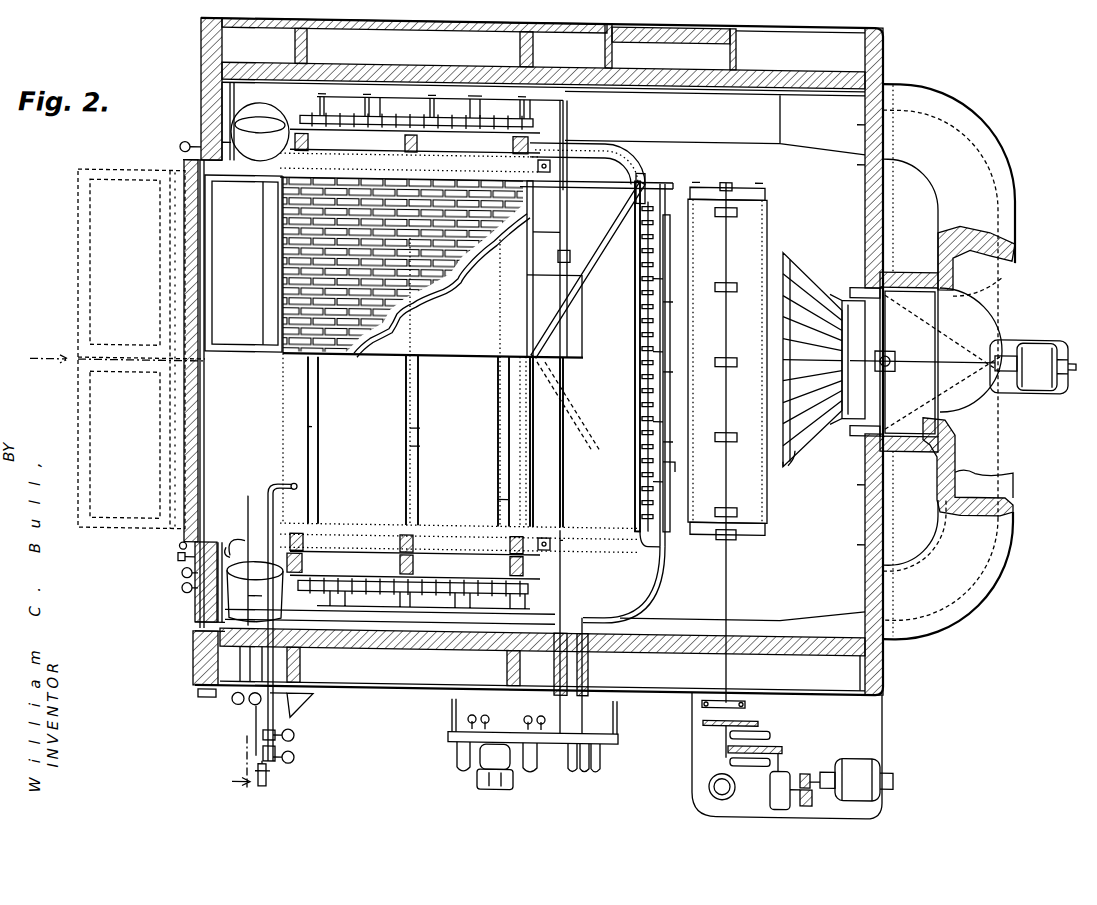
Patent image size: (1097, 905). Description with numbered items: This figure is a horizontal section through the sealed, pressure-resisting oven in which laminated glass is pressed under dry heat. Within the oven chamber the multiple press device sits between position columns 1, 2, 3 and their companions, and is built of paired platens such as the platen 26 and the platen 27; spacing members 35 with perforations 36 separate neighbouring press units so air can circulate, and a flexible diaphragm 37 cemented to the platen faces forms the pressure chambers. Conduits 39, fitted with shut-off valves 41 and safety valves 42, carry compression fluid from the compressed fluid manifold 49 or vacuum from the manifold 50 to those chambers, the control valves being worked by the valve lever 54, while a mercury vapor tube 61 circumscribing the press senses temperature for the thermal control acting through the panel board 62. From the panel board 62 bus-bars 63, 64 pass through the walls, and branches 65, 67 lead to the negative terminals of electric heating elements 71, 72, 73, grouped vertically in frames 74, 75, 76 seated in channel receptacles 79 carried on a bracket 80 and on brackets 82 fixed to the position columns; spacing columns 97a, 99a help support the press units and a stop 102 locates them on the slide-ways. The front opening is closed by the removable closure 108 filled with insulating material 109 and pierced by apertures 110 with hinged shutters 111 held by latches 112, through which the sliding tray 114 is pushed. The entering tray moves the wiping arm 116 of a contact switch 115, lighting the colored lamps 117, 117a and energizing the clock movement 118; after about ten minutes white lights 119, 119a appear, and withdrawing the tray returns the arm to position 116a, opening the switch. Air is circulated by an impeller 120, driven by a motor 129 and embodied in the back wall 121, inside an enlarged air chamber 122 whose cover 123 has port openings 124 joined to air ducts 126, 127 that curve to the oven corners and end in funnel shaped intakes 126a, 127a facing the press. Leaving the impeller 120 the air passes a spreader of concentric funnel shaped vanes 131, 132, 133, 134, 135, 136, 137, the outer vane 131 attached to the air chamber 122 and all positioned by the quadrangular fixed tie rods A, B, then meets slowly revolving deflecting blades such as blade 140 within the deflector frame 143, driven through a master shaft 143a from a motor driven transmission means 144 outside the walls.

The position column 1 is at (280, 128).
The position column 2 is at (417, 146).
The position column 3 is at (513, 146).
The platen 26 is at (275, 295).
The platen 27 is at (513, 228).
The spacing member 35 is at (412, 448).
The perforation 36 is at (313, 430).
The flexible diaphragm 37 is at (433, 268).
The conduit 39 is at (252, 610).
The shut-off valve 41 is at (300, 714).
The safety valve 42 is at (262, 752).
The compressed fluid manifold 49 is at (295, 740).
The vacuum manifold 50 is at (295, 762).
The valve lever 54 is at (268, 784).
The mercury vapor tube 61 is at (340, 145).
The panel board 62 is at (620, 738).
The bus-bar 63 is at (560, 705).
The bus-bar 64 is at (585, 711).
The branch 65 is at (586, 604).
The branch 67 is at (655, 596).
The electric heating element 71 is at (390, 617).
The electric heating element 72 is at (634, 383).
The electric heating element 73 is at (470, 117).
The frame 74 is at (515, 598).
The frame 75 is at (670, 484).
The frame 76 is at (515, 128).
The channel receptacle 79 is at (550, 133).
The bracket 80 is at (636, 166).
The bracket 82 is at (308, 145).
The support block 97a is at (300, 537).
The support block 99a is at (523, 537).
The stop 102 is at (552, 168).
The removable closure 108 is at (204, 112).
The insulating material 109 is at (204, 132).
The aperture 110 is at (190, 441).
The hinged shutter 111 is at (183, 417).
The latch 112 is at (165, 566).
The sliding tray 114 is at (285, 253).
The contact switch 115 is at (254, 580).
The wiping arm 116 is at (266, 535).
The wiping contact position 116a is at (179, 551).
The lamp 117 is at (182, 595).
The colored light 117a is at (256, 733).
The clock movement 118 is at (198, 699).
The white light 119 is at (182, 579).
The white light 119a is at (235, 709).
The impeller 120 is at (858, 283).
The back wall 121 is at (866, 508).
The air chamber 122 is at (925, 322).
The cover 123 is at (945, 420).
The port opening 124 is at (940, 292).
The air duct 126 is at (907, 557).
The funnel shaped intake 126a is at (248, 591).
The air duct 127 is at (790, 298).
The funnel shaped intake 127a is at (250, 178).
The motor 129 is at (1035, 336).
The funnel shaped vane 131 is at (793, 466).
The funnel shaped vane 132 is at (790, 442).
The funnel shaped vane 133 is at (790, 425).
The funnel shaped vane 134 is at (790, 408).
The funnel shaped vane 135 is at (790, 392).
The funnel shaped vane 136 is at (790, 374).
The vane 137 is at (840, 415).
The deflecting blade 140 is at (727, 361).
The deflector enclosure 143 is at (740, 196).
The master shaft 143a is at (730, 562).
The motor driven transmission means 144 is at (770, 746).
The tie rod A is at (786, 252).
The tie rod B is at (830, 348).